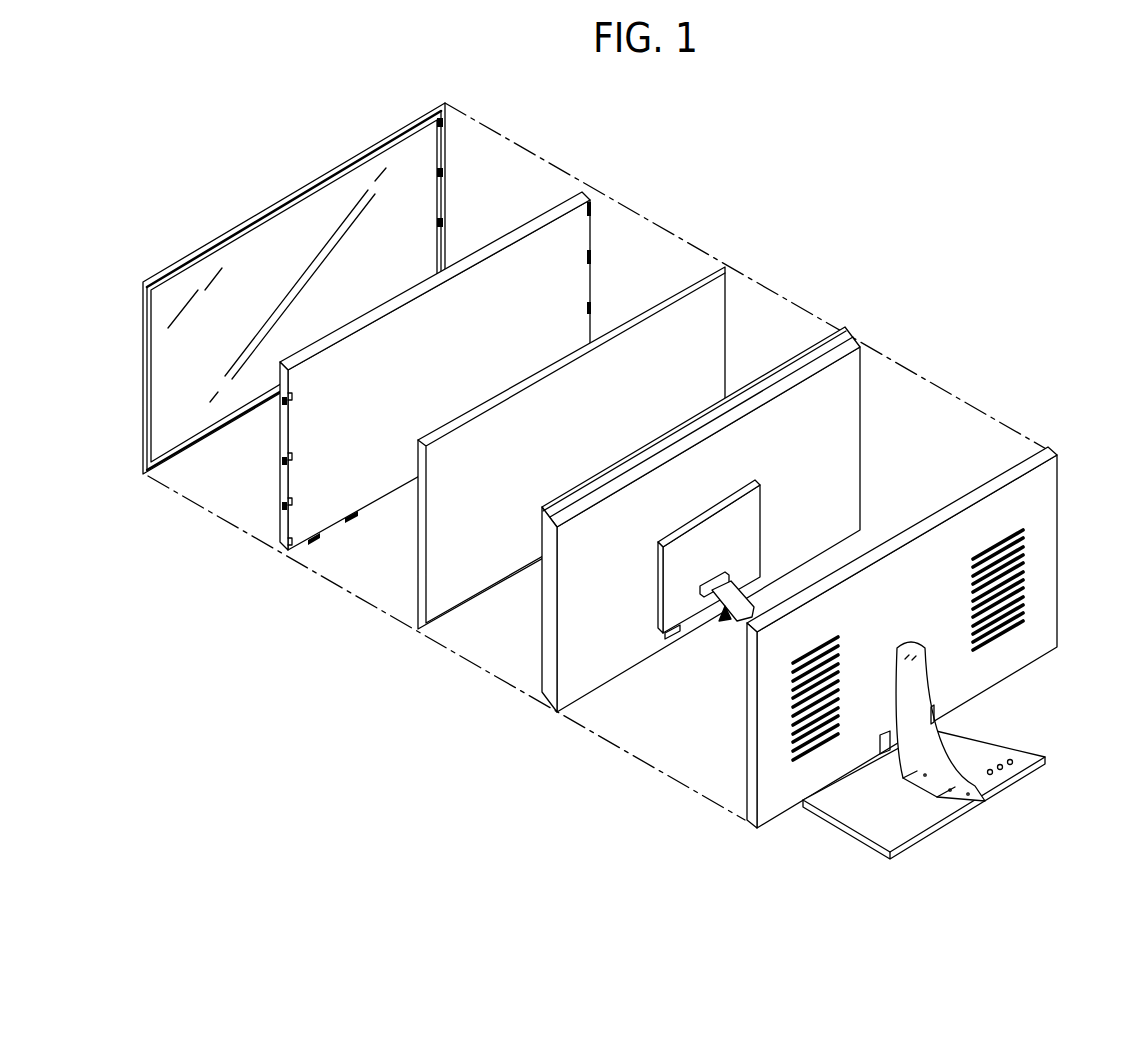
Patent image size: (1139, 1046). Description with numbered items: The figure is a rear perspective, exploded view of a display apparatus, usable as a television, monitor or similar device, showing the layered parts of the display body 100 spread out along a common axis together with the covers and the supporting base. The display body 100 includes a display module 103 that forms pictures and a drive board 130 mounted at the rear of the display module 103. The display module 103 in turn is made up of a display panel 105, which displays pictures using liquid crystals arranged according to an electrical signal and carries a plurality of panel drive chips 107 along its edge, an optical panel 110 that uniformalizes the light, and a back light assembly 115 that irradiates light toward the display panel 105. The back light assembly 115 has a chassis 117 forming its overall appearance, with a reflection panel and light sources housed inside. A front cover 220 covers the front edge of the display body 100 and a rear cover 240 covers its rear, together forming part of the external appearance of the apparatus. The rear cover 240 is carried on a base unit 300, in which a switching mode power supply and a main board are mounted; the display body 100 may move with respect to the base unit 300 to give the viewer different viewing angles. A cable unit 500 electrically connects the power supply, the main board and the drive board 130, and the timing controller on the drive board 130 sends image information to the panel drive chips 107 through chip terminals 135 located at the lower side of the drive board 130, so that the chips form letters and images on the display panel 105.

The display body 100 is at (619, 515).
The display module 103 is at (453, 452).
The display panel 105 is at (386, 397).
The panel drive chips 107 is at (282, 519).
The optical panel 110 is at (440, 567).
The back light assembly 115 is at (651, 490).
The chassis 117 is at (797, 363).
The drive board 130 is at (752, 712).
The chip terminals 135 is at (750, 583).
The front cover 220 is at (145, 447).
The rear cover 240 is at (747, 642).
The base unit 300 is at (1028, 753).
The cable unit 500 is at (722, 623).